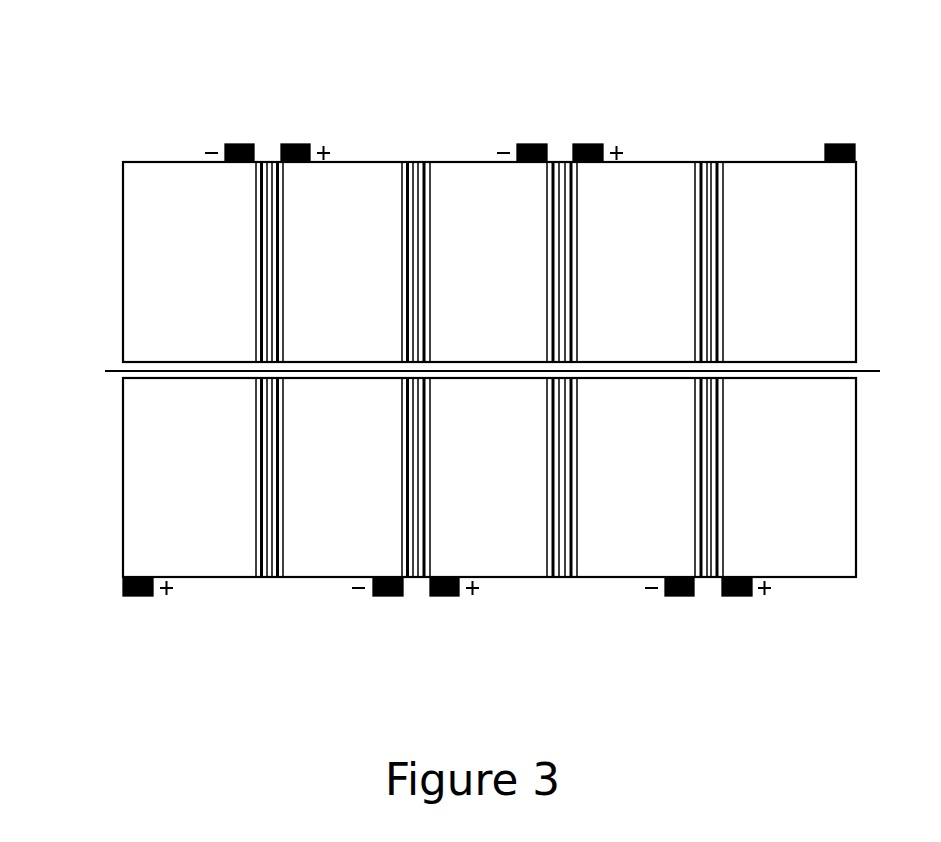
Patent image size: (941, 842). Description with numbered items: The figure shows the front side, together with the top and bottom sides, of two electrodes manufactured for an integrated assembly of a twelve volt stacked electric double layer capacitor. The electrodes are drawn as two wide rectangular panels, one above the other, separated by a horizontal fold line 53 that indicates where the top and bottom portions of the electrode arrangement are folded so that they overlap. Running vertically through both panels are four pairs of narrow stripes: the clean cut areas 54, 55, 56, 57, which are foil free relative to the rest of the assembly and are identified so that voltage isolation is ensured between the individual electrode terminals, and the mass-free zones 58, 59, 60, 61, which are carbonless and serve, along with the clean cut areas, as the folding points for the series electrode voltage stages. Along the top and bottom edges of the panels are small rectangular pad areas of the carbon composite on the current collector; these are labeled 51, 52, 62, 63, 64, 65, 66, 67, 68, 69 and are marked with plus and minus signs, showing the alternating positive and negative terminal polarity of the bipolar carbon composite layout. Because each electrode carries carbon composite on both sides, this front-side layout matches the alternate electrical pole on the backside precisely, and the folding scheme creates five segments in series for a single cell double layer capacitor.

The positive terminal pad 51 is at (140, 597).
The terminal pad 52 is at (840, 144).
The fold line 53 is at (100, 371).
The clean cut area 54 is at (270, 579).
The clean cut area 55 is at (416, 161).
The clean cut area 56 is at (562, 579).
The clean cut area 57 is at (709, 161).
The mass-free zone 58 is at (270, 161).
The mass-free zone 59 is at (416, 579).
The mass-free zone 60 is at (562, 161).
The mass-free zone 61 is at (709, 579).
The negative terminal pad 62 is at (240, 144).
The negative terminal pad 63 is at (390, 597).
The negative terminal pad 64 is at (532, 144).
The negative terminal pad 65 is at (680, 597).
The positive terminal pad 66 is at (295, 144).
The positive terminal pad 67 is at (445, 597).
The positive terminal pad 68 is at (588, 144).
The positive terminal pad 69 is at (737, 597).